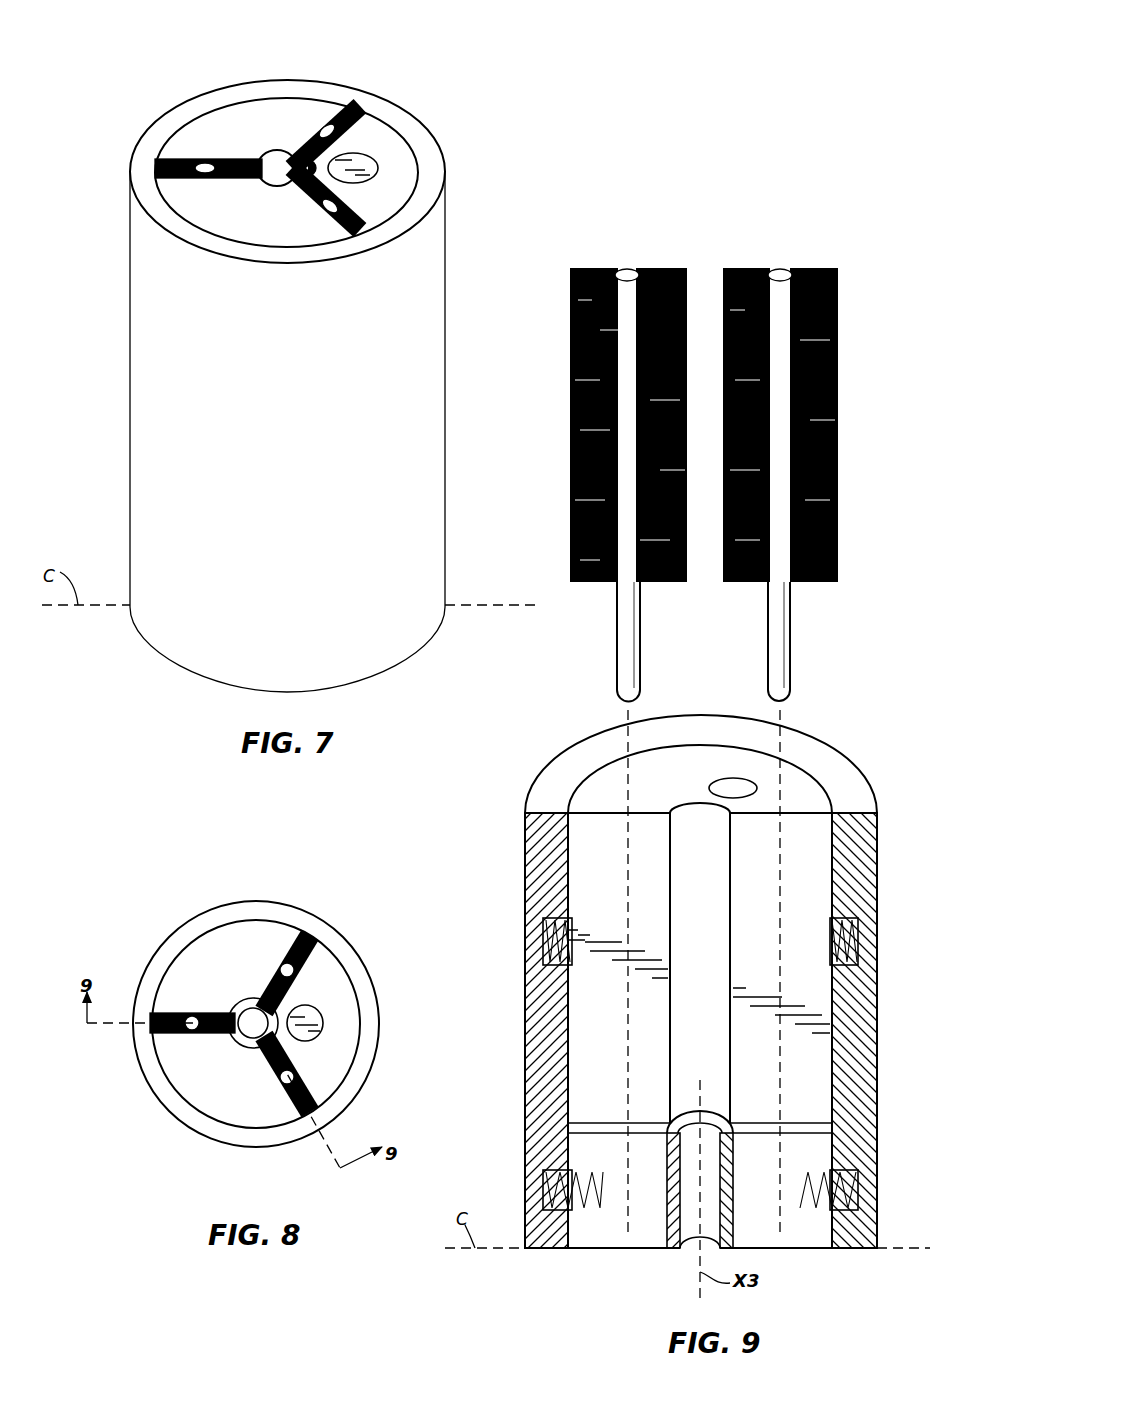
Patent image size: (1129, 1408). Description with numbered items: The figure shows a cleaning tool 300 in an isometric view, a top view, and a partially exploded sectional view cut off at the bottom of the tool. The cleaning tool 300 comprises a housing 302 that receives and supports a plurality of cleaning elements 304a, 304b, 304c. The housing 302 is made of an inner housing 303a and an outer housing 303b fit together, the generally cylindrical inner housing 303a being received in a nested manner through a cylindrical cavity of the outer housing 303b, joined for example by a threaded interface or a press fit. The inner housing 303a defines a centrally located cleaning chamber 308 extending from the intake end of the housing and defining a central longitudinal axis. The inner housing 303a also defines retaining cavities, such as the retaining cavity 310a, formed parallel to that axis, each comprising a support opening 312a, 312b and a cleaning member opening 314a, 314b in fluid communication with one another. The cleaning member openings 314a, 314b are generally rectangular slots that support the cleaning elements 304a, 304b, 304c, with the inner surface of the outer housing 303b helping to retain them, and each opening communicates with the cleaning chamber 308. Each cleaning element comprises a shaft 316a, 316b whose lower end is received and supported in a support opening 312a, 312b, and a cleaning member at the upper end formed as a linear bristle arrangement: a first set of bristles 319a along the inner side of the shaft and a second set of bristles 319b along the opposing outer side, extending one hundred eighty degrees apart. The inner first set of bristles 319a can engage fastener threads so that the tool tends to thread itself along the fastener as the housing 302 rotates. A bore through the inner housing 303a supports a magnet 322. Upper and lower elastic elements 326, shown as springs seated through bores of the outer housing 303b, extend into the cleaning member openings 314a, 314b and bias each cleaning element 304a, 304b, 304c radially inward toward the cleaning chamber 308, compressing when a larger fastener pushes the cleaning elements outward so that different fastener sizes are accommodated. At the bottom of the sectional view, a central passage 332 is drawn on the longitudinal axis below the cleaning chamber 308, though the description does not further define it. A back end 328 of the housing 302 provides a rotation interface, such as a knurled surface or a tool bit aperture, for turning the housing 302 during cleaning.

In FIG. 7, the cleaning tool 300 is at (178, 68).
In FIG. 8, the cleaning tool 300 is at (203, 883).
In FIG. 7, the housing 302 is at (125, 297).
In FIG. 8, the housing 302 is at (165, 930).
In FIG. 7, the inner housing 303a is at (388, 138).
In FIG. 8, the inner housing 303a is at (337, 988).
In FIG. 9, the inner housing 303a is at (768, 770).
In FIG. 7, the outer housing 303b is at (432, 180).
In FIG. 8, the outer housing 303b is at (337, 947).
In FIG. 9, the outer housing 303b is at (850, 785).
In FIG. 7, the cleaning element 304a is at (198, 160).
In FIG. 8, the cleaning element 304a is at (195, 1012).
In FIG. 9, the cleaning element 304a is at (632, 260).
In FIG. 7, the cleaning element 304b is at (330, 212).
In FIG. 8, the cleaning element 304b is at (290, 1112).
In FIG. 9, the cleaning element 304b is at (777, 260).
In FIG. 7, the cleaning element 304c is at (318, 130).
In FIG. 8, the cleaning element 304c is at (290, 965).
In FIG. 7, the cleaning chamber 308 is at (277, 163).
In FIG. 8, the cleaning chamber 308 is at (253, 1027).
In FIG. 9, the cleaning chamber 308 is at (703, 903).
In FIG. 9, the retaining cavity 310a is at (597, 1012).
In FIG. 9, the support opening 312a is at (603, 1227).
In FIG. 9, the support opening 312b is at (810, 1240).
In FIG. 9, the cleaning member opening 314a is at (600, 1072).
In FIG. 9, the cleaning member opening 314b is at (815, 1098).
In FIG. 9, the shaft 316a is at (628, 660).
In FIG. 9, the shaft 316b is at (782, 660).
In FIG. 9, the first set of bristles 319a is at (662, 268).
In FIG. 9, the second set of bristles 319b is at (825, 268).
In FIG. 7, the magnet 322 is at (360, 175).
In FIG. 8, the magnet 322 is at (313, 1037).
In FIG. 9, the magnet 322 is at (735, 778).
In FIG. 9, the elastic element 326 is at (545, 920).
In FIG. 7, the back end 328 is at (387, 667).
In FIG. 9, the central bore 332 is at (698, 1218).